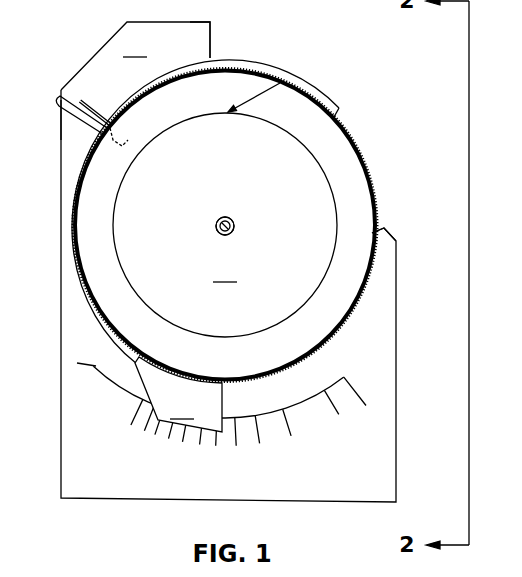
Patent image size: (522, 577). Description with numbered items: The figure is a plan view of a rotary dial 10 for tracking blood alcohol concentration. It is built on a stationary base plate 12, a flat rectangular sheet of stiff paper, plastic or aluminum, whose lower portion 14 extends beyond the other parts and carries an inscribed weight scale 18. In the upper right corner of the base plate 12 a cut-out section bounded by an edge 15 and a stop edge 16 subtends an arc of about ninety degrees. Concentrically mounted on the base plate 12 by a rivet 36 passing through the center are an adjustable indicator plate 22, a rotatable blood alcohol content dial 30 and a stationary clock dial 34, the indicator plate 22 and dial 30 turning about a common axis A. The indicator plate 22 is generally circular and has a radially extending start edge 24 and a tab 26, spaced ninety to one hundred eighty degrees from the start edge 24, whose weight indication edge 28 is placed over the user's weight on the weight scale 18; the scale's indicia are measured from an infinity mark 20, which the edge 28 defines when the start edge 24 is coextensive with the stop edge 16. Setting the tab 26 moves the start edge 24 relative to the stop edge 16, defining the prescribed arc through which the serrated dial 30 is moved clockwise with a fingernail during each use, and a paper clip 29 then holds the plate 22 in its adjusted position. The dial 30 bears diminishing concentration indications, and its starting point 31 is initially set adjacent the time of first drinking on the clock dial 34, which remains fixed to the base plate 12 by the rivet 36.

The rotary dial 10 is at (61, 121).
The stationary base plate 12 is at (135, 56).
The lower portion 14 is at (80, 488).
The edge 15 is at (210, 32).
The stop edge 16 is at (384, 228).
The weight scale 18 is at (305, 459).
The infinity mark 20 is at (77, 363).
The adjustable indicator plate 22 is at (272, 72).
The start edge 24 is at (343, 114).
The tab 26 is at (178, 394).
The weight indication edge 28 is at (223, 391).
The paper clip 29 is at (57, 97).
The blood alcohol content dial 30 is at (345, 184).
The starting point 31 is at (287, 82).
The clock dial 34 is at (225, 225).
The rivet 36 is at (234, 221).
The common axis A is at (218, 223).